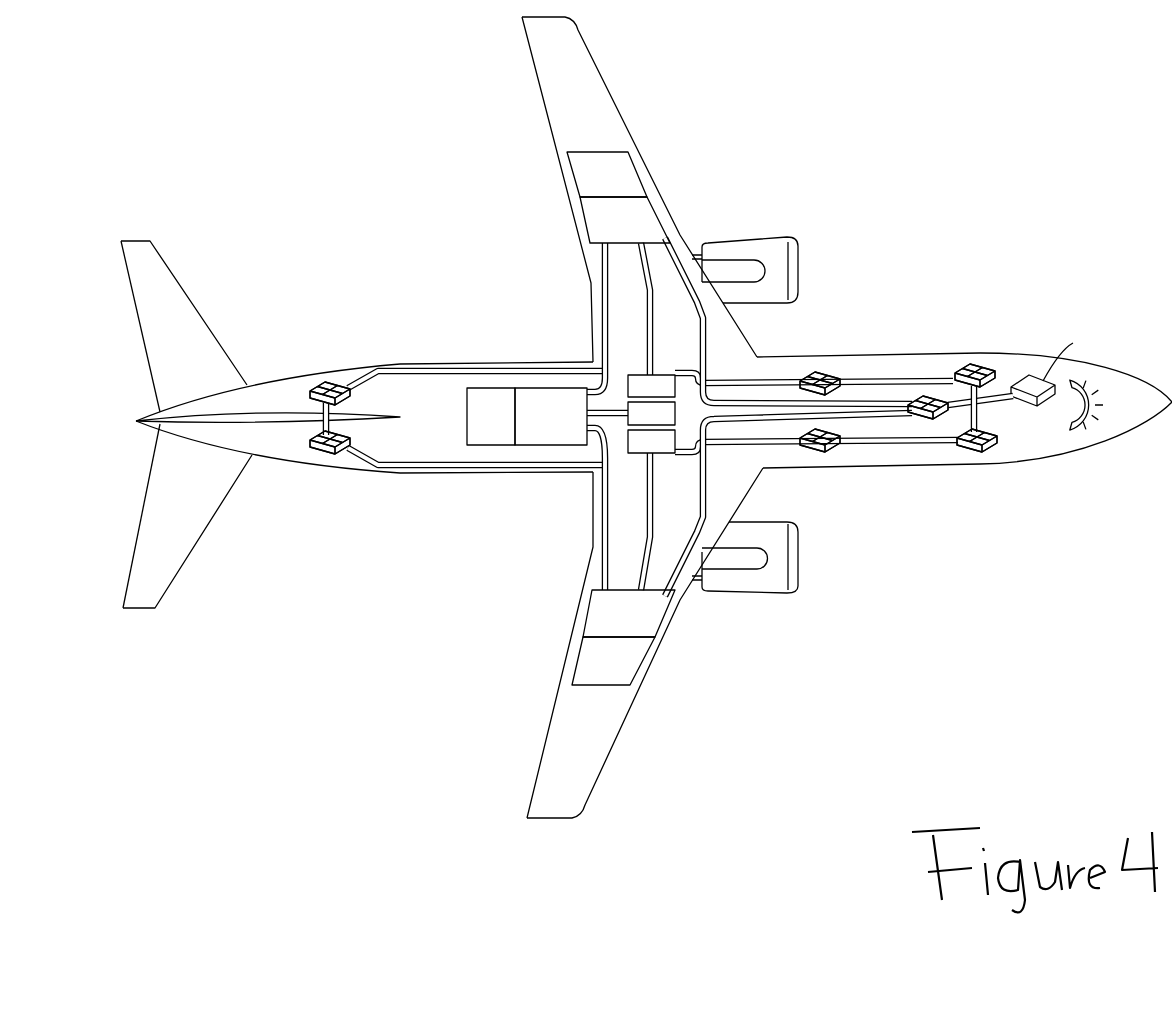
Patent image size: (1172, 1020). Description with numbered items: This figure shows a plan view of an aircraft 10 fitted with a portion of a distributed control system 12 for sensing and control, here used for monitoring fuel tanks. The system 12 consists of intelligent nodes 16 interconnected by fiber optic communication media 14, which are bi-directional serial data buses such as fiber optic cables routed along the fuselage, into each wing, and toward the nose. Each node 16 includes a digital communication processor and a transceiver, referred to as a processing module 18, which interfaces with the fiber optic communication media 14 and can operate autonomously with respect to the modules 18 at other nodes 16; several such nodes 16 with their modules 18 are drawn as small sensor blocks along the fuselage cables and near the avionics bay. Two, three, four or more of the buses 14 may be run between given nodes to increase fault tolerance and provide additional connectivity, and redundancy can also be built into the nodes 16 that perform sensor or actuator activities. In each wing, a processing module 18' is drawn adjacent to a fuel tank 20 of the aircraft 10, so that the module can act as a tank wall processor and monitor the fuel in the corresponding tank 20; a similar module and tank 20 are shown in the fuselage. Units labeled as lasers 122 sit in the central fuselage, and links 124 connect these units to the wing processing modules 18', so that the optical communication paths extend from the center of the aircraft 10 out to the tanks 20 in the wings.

The aircraft 10 is at (814, 126).
The distributed control system 12 is at (884, 366).
The fiber optic communication media 14 is at (447, 369).
The intelligent node 16 is at (662, 190).
The processing module 18 is at (679, 414).
The processing module 18' is at (624, 417).
The fuel tank 20 is at (637, 172).
The laser 122 is at (667, 375).
The fiber optic link 124 is at (640, 267).